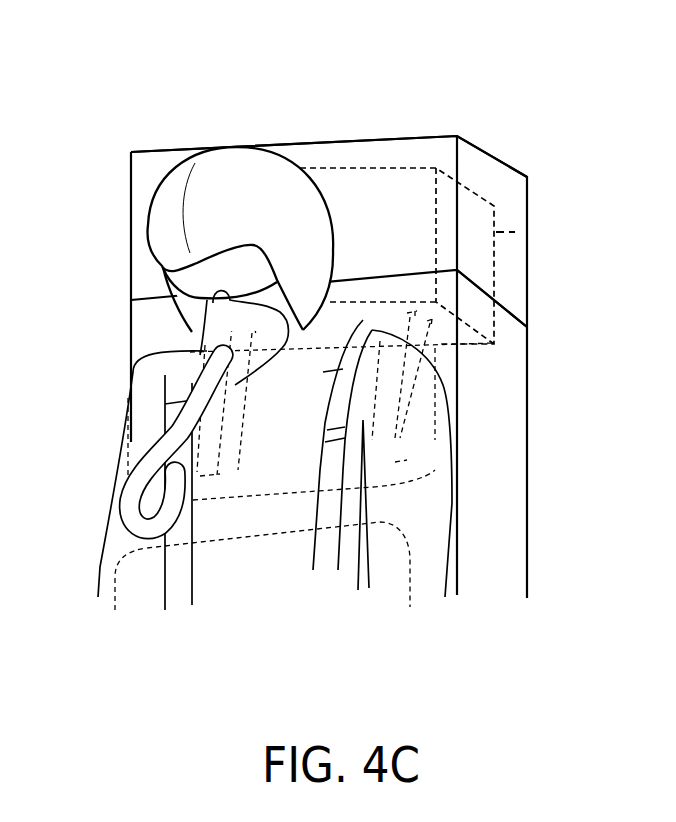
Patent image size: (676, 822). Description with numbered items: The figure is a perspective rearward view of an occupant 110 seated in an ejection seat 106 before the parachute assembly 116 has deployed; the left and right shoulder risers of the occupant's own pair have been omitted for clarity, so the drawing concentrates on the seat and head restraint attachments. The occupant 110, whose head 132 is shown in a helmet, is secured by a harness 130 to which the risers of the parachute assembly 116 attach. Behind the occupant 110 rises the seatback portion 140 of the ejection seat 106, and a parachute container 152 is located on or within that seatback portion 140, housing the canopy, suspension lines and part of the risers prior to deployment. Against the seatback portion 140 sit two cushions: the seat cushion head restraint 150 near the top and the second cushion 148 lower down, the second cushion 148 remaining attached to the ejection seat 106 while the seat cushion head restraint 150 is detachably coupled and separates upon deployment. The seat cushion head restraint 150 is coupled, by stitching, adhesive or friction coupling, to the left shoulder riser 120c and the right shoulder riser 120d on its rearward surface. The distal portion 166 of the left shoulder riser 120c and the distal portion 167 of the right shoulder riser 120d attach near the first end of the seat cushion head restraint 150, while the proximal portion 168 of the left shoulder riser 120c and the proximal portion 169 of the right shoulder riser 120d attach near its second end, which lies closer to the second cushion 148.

The ejection seat 106 is at (152, 132).
The occupant 110 is at (102, 247).
The parachute assembly 116 is at (355, 196).
The left shoulder riser 120c is at (363, 323).
The right shoulder riser 120d is at (197, 367).
The harness 130 is at (328, 497).
The head 132 is at (243, 206).
The seatback portion 140 is at (507, 355).
The second cushion 148 is at (407, 573).
The seat cushion head restraint 150 is at (432, 363).
The parachute container 152 is at (527, 228).
The distal portion 166 is at (312, 375).
The distal portion 167 is at (187, 376).
The proximal portion 168 is at (382, 456).
The proximal portion 169 is at (207, 469).